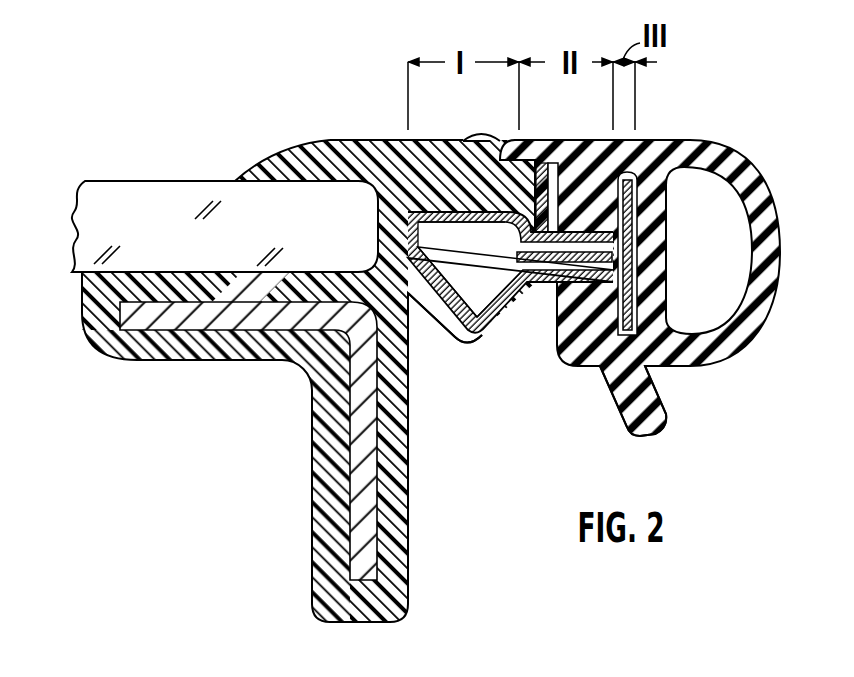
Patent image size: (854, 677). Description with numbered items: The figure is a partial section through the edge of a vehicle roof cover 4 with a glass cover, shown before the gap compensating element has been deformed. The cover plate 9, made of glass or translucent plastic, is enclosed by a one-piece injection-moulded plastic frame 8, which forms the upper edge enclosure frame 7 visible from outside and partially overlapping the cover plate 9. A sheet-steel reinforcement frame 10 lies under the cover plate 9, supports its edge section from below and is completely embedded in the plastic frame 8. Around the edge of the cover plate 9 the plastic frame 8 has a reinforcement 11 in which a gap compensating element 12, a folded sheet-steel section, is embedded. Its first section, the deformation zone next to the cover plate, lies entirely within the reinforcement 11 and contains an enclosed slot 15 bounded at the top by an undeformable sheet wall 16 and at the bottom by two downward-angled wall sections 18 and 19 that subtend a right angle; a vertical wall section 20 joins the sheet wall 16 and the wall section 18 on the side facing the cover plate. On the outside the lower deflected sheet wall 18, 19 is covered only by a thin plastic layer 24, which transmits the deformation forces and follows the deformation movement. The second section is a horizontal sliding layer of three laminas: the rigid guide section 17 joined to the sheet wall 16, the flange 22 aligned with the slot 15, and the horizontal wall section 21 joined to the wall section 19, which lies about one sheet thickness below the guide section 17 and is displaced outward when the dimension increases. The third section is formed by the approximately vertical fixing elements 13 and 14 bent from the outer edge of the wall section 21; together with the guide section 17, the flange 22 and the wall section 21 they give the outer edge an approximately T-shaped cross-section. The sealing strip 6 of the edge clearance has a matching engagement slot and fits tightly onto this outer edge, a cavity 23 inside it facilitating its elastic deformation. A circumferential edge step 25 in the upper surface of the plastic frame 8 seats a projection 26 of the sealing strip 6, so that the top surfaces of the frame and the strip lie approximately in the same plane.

The glass pane 4 is at (185, 181).
The sealing strip of the edge clearance 6 is at (656, 140).
The upper edge enclosure frame 7 is at (283, 152).
The plastic frame 8 is at (347, 140).
The cover plate 9 is at (104, 197).
The reinforcement frame 10 is at (367, 460).
The reinforcement 11 is at (392, 192).
The gap compensating element 12 is at (553, 285).
The fixing element 13 is at (640, 204).
The fixing element 14 is at (640, 310).
The enclosed slot 15 is at (472, 290).
The sheet wall 16 is at (472, 224).
The guide section 17 is at (578, 146).
The wall section 18 is at (430, 280).
The wall section 19 is at (517, 278).
The vertical wall section 20 is at (415, 238).
The wall section 21 is at (590, 369).
The flange 22 is at (541, 155).
The cavity 23 is at (741, 295).
The plastic layer 24 is at (452, 328).
The edge step 25 is at (483, 143).
The projection 26 is at (497, 138).